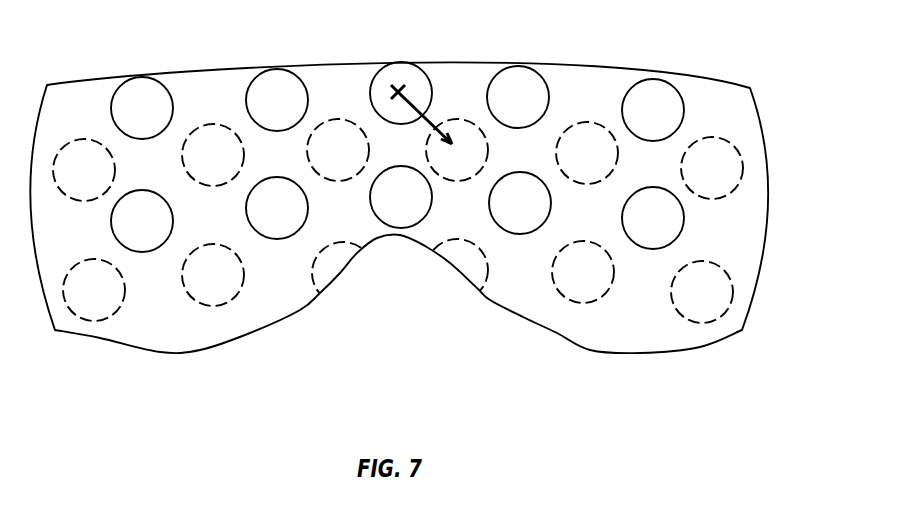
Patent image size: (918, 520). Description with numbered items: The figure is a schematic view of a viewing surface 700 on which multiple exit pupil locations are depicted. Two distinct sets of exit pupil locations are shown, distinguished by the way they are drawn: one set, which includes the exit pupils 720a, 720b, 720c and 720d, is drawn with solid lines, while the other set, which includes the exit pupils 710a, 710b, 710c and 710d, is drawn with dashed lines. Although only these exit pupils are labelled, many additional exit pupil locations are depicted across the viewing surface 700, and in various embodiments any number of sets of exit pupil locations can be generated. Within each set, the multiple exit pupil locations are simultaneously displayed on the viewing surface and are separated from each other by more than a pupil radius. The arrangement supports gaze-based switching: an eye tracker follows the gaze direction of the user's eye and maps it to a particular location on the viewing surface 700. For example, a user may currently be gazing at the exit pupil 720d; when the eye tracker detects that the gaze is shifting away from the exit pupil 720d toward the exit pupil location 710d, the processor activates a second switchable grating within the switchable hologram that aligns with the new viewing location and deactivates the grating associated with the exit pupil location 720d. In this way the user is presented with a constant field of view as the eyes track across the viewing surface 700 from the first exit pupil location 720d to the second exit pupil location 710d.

The viewing surface 700 is at (461, 62).
The exit pupil 710a is at (727, 142).
The exit pupil 710b is at (732, 283).
The exit pupil 710c is at (607, 295).
The exit pupil location 710d is at (483, 132).
The exit pupil 720a is at (675, 87).
The exit pupil 720b is at (683, 210).
The exit pupil 720c is at (503, 240).
The exit pupil 720d is at (397, 75).